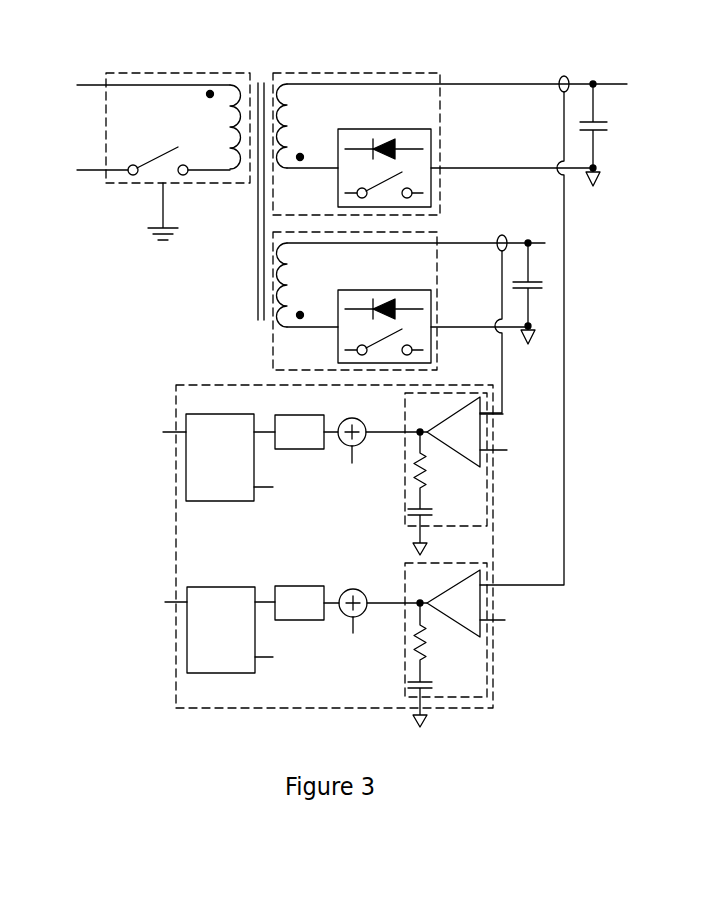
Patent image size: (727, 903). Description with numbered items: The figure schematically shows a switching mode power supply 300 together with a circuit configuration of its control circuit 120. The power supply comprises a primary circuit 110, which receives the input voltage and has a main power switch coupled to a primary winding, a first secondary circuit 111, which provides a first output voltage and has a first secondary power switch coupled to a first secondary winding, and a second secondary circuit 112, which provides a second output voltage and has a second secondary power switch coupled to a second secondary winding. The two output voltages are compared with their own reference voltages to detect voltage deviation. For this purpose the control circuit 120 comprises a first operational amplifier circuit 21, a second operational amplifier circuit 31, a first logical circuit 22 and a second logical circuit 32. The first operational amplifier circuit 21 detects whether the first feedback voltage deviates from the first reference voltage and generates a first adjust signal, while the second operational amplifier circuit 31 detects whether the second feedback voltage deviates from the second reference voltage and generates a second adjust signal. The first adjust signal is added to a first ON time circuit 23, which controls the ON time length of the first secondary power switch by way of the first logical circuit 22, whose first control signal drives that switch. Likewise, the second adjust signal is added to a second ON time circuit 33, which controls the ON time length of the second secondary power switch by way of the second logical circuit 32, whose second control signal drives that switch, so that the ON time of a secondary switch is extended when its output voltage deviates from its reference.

The switching mode power supply 300 is at (117, 42).
The primary circuit 110 is at (188, 70).
The first secondary circuit 111 is at (442, 100).
The second secondary circuit 112 is at (440, 277).
The control circuit 120 is at (347, 552).
The second operational amplifier circuit 31 is at (482, 517).
The second logical circuit 32 is at (230, 457).
The second ON time circuit 33 is at (306, 432).
The first operational amplifier circuit 21 is at (483, 691).
The first logical circuit 22 is at (231, 630).
The first ON time circuit 23 is at (307, 603).